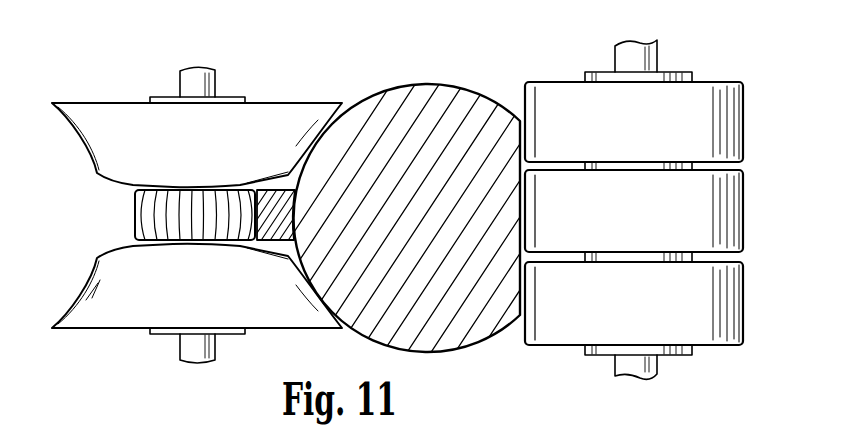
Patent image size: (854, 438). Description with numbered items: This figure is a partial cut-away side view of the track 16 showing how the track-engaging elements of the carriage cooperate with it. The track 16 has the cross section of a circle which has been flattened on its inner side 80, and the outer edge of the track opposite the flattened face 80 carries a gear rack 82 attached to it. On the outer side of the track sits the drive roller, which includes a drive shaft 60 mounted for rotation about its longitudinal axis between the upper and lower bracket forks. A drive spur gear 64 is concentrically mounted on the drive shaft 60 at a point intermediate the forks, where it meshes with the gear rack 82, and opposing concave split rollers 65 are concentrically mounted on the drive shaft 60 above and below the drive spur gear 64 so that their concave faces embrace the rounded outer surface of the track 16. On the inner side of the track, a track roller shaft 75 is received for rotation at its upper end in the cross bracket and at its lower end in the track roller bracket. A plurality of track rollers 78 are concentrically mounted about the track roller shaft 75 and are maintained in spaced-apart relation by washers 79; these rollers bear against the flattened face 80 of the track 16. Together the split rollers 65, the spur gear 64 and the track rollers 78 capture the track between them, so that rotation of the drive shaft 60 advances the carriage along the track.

The track 16 is at (444, 93).
The drive shaft 60 is at (216, 73).
The drive spur gear 64 is at (137, 225).
The concave split rollers 65 is at (99, 150).
The track roller shaft 75 is at (613, 56).
The track rollers 78 is at (624, 139).
The washers 79 is at (590, 257).
The flattened inner side 80 is at (530, 166).
The gear rack 82 is at (287, 172).